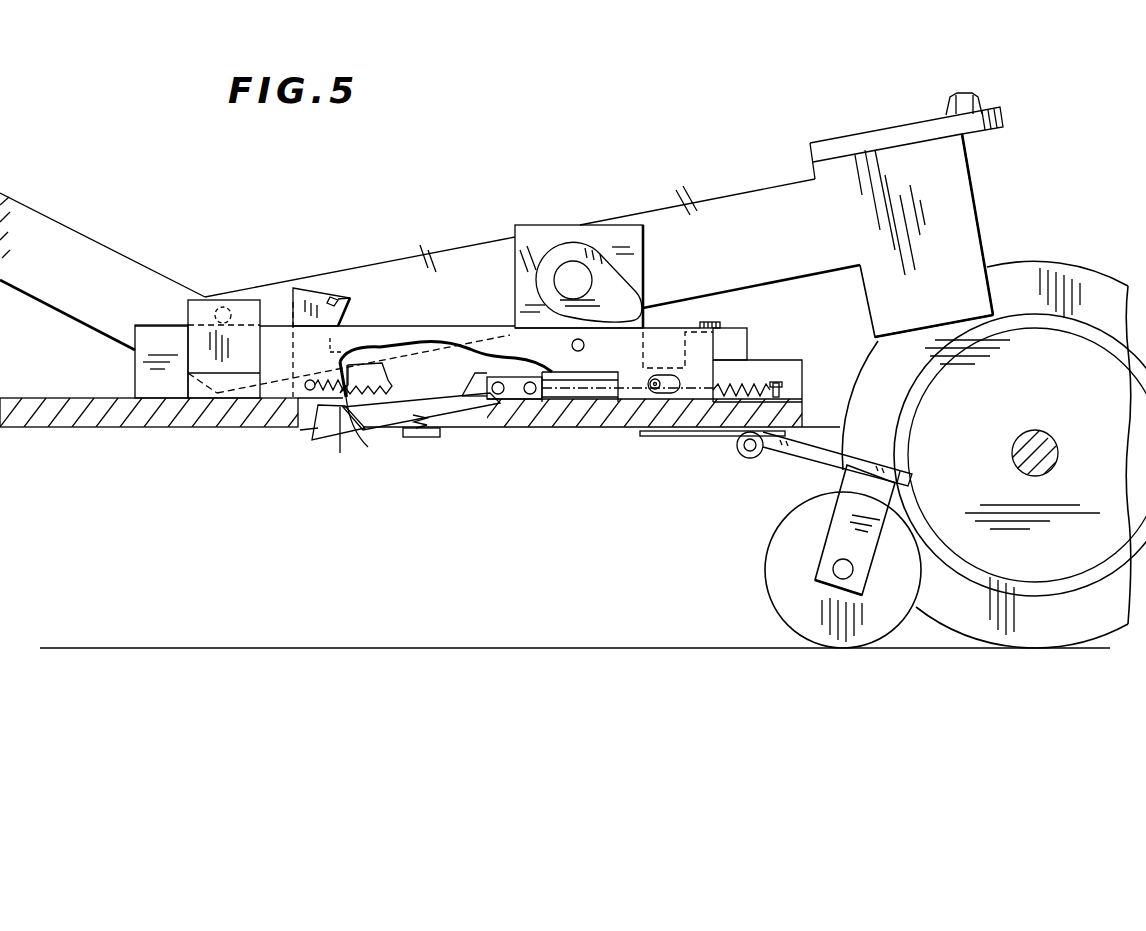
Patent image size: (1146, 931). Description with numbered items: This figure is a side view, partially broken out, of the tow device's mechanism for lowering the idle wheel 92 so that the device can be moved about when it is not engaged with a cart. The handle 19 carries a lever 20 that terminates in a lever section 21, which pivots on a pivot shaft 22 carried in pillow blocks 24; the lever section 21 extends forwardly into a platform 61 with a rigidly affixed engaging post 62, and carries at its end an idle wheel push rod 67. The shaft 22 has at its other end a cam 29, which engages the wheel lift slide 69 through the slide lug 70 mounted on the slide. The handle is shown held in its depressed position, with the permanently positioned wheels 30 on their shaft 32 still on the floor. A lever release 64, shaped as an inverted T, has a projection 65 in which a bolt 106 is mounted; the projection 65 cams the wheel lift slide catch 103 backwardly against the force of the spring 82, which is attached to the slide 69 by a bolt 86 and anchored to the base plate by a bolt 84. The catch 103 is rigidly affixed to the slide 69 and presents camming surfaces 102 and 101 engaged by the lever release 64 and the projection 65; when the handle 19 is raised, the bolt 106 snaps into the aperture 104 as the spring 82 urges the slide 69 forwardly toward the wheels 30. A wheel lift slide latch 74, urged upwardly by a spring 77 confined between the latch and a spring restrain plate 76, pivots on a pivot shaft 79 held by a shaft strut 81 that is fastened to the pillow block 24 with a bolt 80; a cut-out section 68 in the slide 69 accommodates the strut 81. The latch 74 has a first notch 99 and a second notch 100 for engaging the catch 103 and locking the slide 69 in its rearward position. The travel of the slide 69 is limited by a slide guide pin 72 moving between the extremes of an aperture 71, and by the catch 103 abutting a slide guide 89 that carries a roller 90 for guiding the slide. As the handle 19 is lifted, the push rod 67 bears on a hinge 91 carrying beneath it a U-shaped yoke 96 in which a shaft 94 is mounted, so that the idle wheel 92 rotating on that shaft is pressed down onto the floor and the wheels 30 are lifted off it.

The handle 19 is at (580, 429).
The lever 20 is at (72, 230).
The lever section 21 is at (448, 251).
The pivot shaft 22 is at (568, 268).
The pillow blocks 24 is at (634, 225).
The cam 29 is at (641, 298).
The wheels 30 is at (1048, 268).
The shaft 32 is at (1026, 434).
The platform 61 is at (866, 138).
The engaging post 62 is at (955, 95).
The lever release 64 is at (388, 374).
The projection 65 is at (348, 425).
The idle wheel push rod 67 is at (868, 315).
The cut-out section 68 is at (608, 370).
The wheel lift slide 69 is at (713, 338).
The slide lug 70 is at (571, 345).
The aperture 71 is at (664, 378).
The slide guide pin 72 is at (656, 392).
The wheel lift slide latch 74 is at (333, 440).
The spring restrain plate 76 is at (430, 440).
The spring 77 is at (420, 420).
The pivot shaft 79 is at (500, 399).
The bolt 80 is at (531, 400).
The shaft strut 81 is at (515, 372).
The spring 82 is at (762, 388).
The bolt 84 is at (782, 386).
The bolt 86 is at (300, 388).
The slide guide 89 is at (192, 300).
The roller 90 is at (233, 300).
The hinge 91 is at (688, 437).
The idle wheel 92 is at (766, 605).
The shaft 94 is at (833, 566).
The U-shaped yoke 96 is at (833, 523).
The first notch 99 is at (344, 410).
The second notch 100 is at (303, 430).
The camming surface 101 is at (352, 305).
The camming surface 102 is at (338, 350).
The wheel lift slide catch 103 is at (300, 293).
The aperture 104 is at (334, 298).
The bolt 106 is at (360, 385).